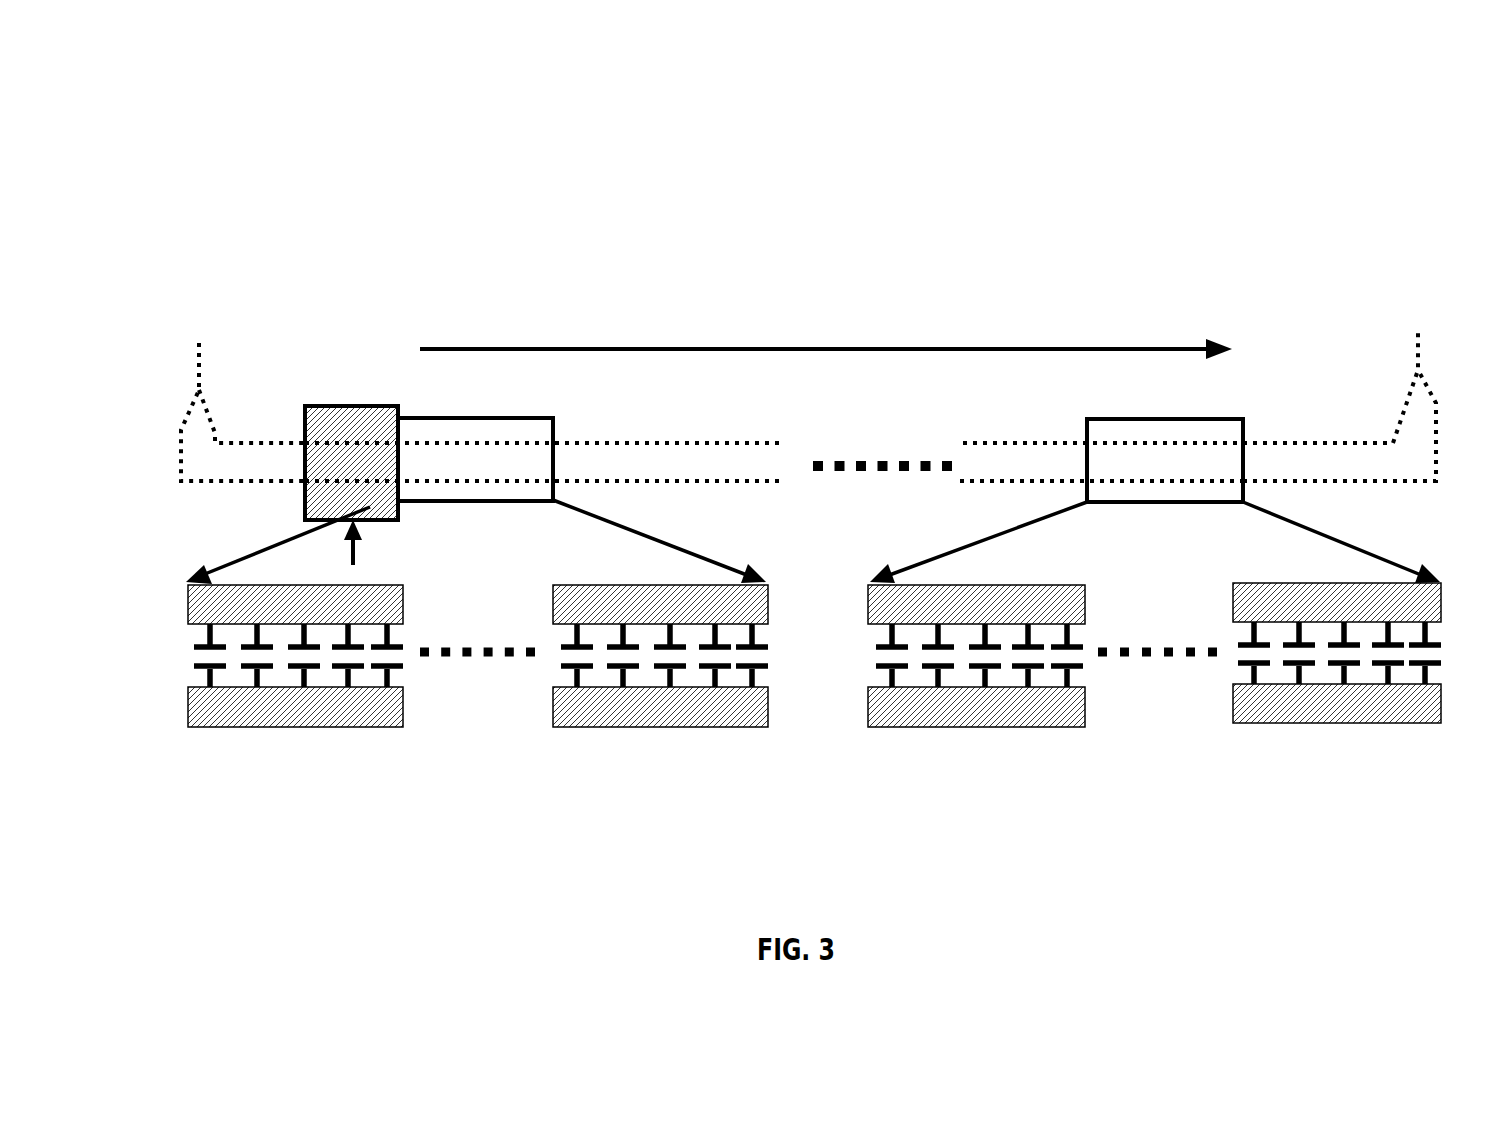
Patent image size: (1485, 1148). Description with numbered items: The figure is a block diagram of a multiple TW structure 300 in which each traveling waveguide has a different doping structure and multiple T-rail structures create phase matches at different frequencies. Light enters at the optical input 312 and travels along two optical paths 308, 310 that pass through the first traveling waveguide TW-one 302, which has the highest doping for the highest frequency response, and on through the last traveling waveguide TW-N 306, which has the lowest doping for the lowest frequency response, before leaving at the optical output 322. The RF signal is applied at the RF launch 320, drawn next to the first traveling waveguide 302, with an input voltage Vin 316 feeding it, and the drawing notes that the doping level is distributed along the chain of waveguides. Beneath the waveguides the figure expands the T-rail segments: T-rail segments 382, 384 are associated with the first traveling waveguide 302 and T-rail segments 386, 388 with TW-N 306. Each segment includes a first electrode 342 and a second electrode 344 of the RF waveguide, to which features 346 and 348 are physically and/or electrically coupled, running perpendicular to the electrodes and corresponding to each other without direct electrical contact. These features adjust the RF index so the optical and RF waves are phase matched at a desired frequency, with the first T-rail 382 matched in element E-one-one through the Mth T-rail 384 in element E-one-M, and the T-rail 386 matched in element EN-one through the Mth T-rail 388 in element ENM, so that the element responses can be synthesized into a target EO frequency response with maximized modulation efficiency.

The multiple TW structure 300 is at (1278, 134).
The TW-1 302 is at (490, 501).
The TW-N 306 is at (1152, 502).
The optical path 308 is at (678, 443).
The optical path 310 is at (668, 482).
The optical input 312 is at (225, 283).
The RF input voltage Vin 316 is at (360, 553).
The RF launch 320 is at (396, 406).
The optical output 322 is at (1375, 276).
The first electrode 342 is at (188, 601).
The second electrode 344 is at (188, 718).
The features 346 is at (200, 647).
The features 348 is at (200, 668).
The first T-rail 382 is at (282, 855).
The Mth T-rail 384 is at (632, 862).
The T-rail 386 is at (977, 858).
The Mth T-rail 388 is at (1292, 833).